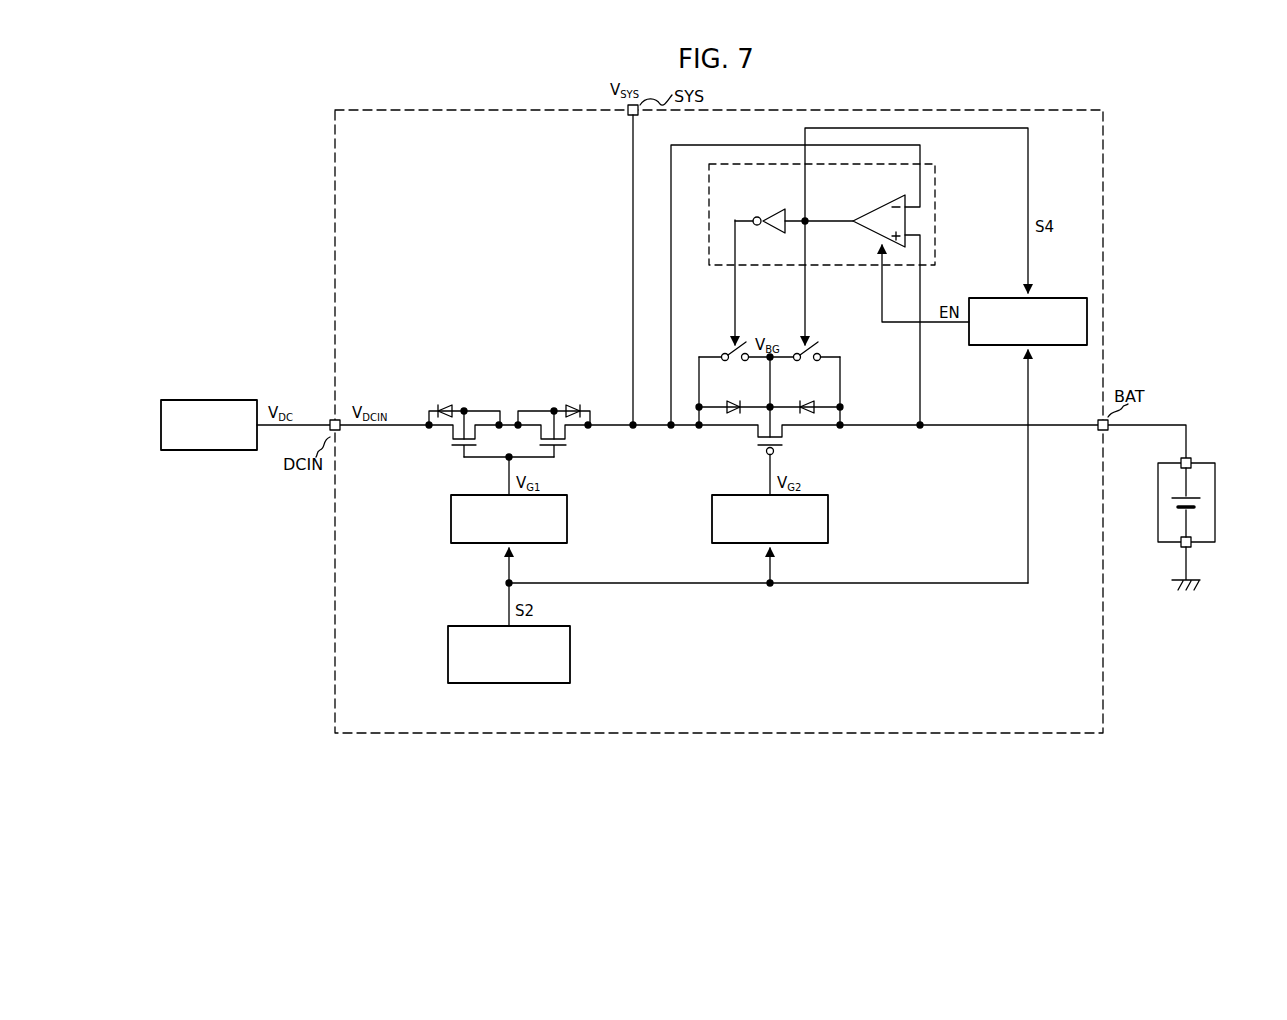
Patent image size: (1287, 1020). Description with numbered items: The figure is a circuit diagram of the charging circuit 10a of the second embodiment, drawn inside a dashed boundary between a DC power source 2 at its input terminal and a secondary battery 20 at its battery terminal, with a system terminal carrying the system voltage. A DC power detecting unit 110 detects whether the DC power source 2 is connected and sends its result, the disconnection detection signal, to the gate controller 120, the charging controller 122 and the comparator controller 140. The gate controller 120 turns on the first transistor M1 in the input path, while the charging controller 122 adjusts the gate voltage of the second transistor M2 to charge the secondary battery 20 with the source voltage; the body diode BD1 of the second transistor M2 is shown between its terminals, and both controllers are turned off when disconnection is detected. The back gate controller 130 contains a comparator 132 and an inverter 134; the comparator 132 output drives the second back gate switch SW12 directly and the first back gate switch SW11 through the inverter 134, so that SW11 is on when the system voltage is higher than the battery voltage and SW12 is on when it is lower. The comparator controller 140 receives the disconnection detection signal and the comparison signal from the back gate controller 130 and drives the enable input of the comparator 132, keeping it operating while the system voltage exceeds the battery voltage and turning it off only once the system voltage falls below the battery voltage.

The DC power source 2 is at (225, 400).
The charging circuit 10a is at (652, 734).
The secondary battery 20 is at (1218, 497).
The DC power detecting unit 110 is at (519, 685).
The gate controller 120 is at (569, 517).
The charging controller 122 is at (830, 517).
The back gate controller 130 is at (853, 214).
The comparator 132 is at (869, 210).
The inverter 134 is at (771, 210).
The comparator controller 140 is at (1058, 297).
The first transistor M1 is at (594, 398).
The second transistor M2 is at (756, 444).
The body diode BD1 is at (736, 400).
The first back gate switch SW11 is at (724, 342).
The second back gate switch SW12 is at (834, 324).